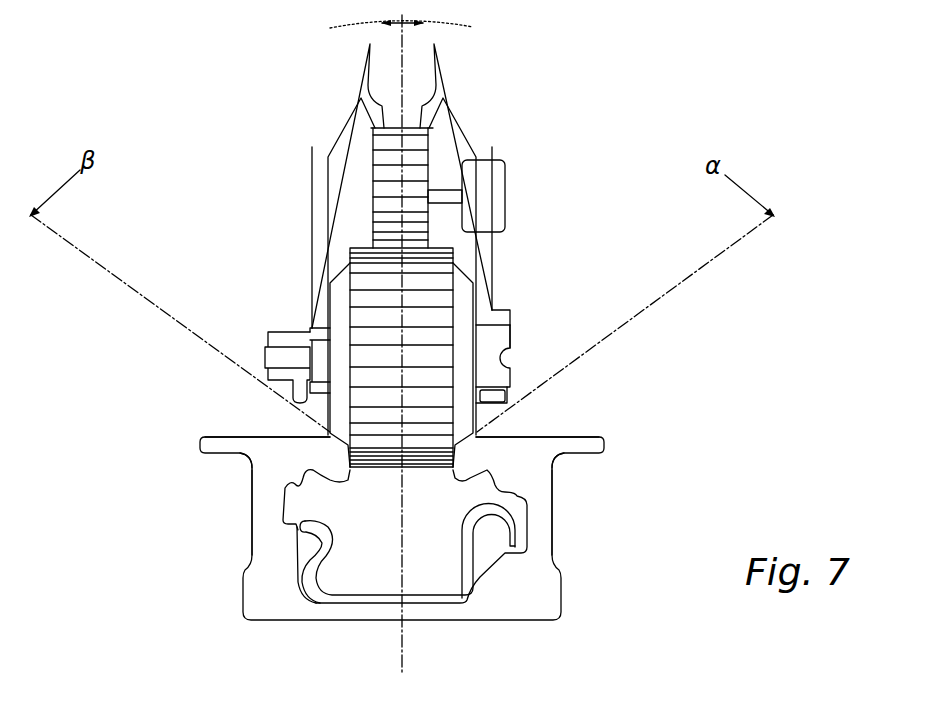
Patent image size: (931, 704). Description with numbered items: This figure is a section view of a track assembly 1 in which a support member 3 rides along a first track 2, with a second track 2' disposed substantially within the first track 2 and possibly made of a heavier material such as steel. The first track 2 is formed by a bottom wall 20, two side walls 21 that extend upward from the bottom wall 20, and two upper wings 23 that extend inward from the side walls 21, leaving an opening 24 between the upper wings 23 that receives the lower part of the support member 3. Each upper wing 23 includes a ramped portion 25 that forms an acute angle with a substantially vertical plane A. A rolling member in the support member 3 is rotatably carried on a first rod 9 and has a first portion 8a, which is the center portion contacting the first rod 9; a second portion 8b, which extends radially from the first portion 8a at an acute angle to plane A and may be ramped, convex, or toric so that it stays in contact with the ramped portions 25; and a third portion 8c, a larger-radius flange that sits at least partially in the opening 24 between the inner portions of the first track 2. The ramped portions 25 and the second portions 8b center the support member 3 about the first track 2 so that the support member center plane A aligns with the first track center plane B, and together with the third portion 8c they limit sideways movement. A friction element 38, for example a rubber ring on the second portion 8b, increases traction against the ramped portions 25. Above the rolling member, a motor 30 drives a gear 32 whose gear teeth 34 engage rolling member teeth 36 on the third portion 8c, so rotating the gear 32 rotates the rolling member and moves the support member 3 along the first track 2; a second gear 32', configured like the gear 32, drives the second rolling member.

The track assembly 1 is at (579, 128).
The first track 2 is at (409, 556).
The second track 2' is at (272, 614).
The support member 3 is at (473, 147).
The first portion 8a is at (310, 328).
The second portion 8b is at (333, 271).
The third portion 8c is at (333, 240).
The first rod 9 is at (477, 345).
The bottom wall 20 is at (447, 624).
The side walls 21 is at (270, 527).
The upper wings 23 is at (230, 436).
The opening 24 is at (427, 487).
The ramped portion 25 is at (330, 440).
The motor 30 is at (497, 183).
The gear 32 is at (360, 245).
The second gear 32' is at (760, 689).
The gear teeth 34 is at (387, 197).
The rolling member teeth 36 is at (453, 249).
The friction element 38 is at (330, 325).
The vertical plane of symmetry A is at (403, 15).
The first track center plane B is at (402, 653).